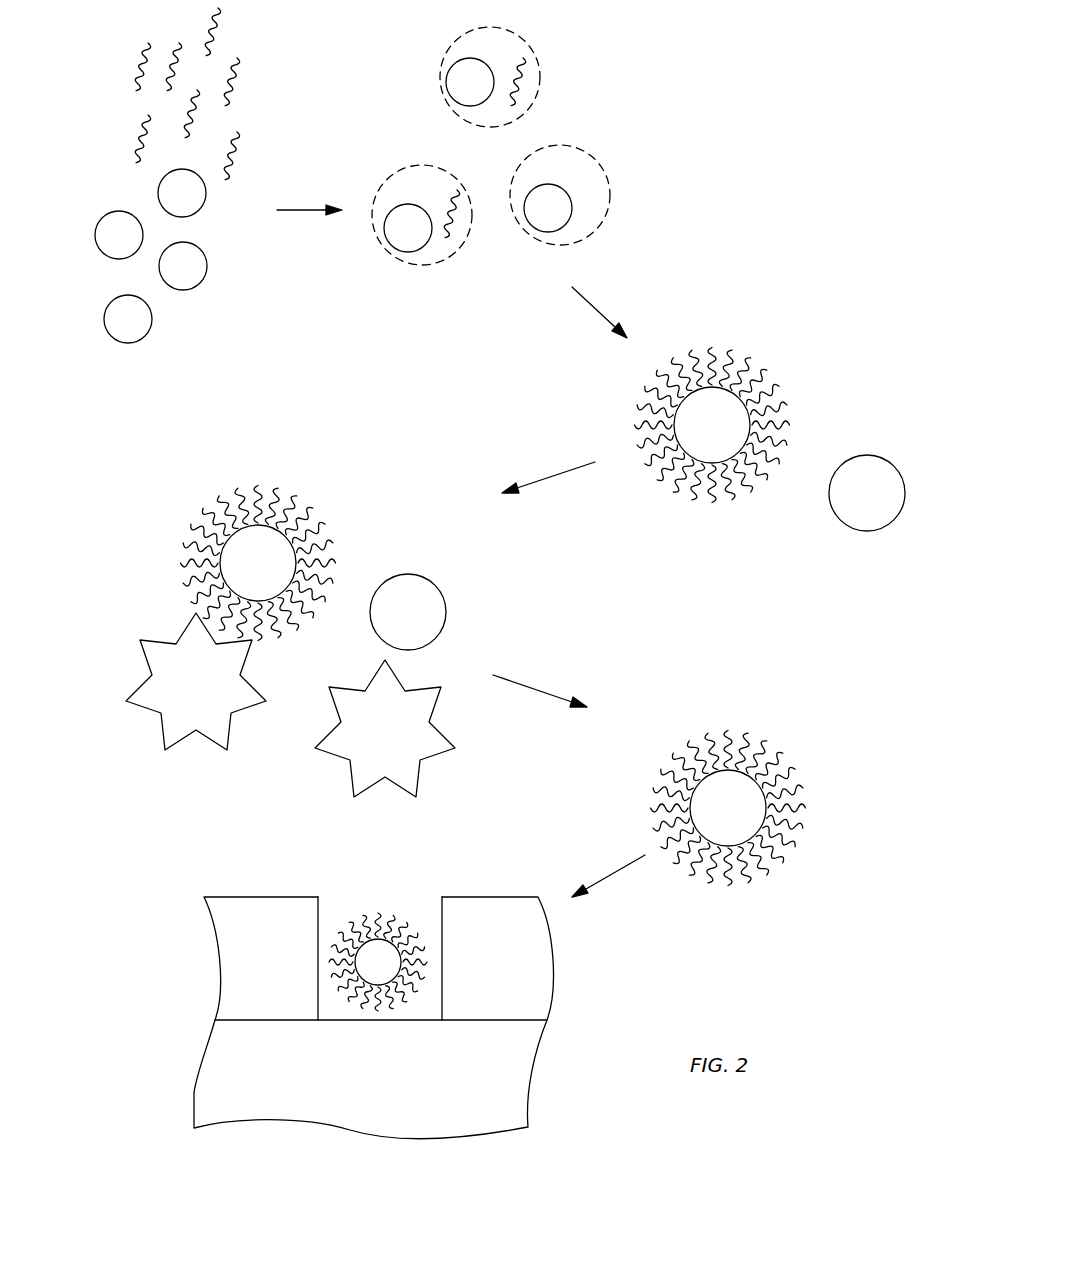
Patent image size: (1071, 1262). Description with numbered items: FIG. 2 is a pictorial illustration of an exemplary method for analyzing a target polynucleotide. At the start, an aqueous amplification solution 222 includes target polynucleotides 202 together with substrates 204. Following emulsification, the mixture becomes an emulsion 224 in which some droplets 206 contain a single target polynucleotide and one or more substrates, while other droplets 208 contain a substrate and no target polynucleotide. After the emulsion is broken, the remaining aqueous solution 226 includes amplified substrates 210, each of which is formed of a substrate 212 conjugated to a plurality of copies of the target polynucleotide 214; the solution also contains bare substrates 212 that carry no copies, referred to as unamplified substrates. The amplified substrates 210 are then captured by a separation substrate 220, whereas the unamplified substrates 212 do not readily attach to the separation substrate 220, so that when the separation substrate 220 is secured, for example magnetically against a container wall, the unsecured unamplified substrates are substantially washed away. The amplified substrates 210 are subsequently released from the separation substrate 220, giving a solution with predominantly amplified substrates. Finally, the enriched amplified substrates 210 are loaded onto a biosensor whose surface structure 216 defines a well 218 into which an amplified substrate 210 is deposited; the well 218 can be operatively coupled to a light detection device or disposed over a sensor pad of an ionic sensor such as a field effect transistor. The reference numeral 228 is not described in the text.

The target polynucleotides 202 is at (122, 117).
The substrates 204 is at (200, 303).
The droplets 206 is at (540, 58).
The droplets 208 is at (610, 175).
The amplified substrates 210 is at (803, 375).
The substrate 212 is at (720, 418).
The copies of the target polynucleotide 214 is at (637, 425).
The surface structure 216 is at (553, 1008).
The well 218 is at (422, 900).
The separation substrate 220 is at (125, 700).
The aqueous amplification solution 222 is at (284, 57).
The emulsion 224 is at (704, 58).
The remaining aqueous solution 226 is at (692, 623).
The removal step 228 is at (160, 796).